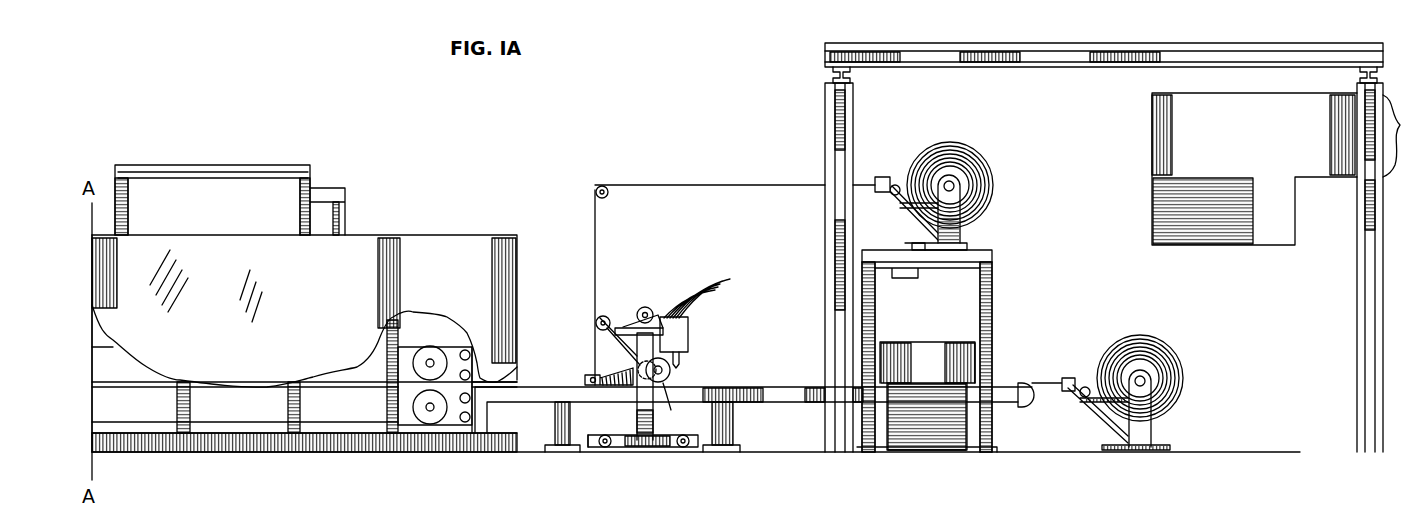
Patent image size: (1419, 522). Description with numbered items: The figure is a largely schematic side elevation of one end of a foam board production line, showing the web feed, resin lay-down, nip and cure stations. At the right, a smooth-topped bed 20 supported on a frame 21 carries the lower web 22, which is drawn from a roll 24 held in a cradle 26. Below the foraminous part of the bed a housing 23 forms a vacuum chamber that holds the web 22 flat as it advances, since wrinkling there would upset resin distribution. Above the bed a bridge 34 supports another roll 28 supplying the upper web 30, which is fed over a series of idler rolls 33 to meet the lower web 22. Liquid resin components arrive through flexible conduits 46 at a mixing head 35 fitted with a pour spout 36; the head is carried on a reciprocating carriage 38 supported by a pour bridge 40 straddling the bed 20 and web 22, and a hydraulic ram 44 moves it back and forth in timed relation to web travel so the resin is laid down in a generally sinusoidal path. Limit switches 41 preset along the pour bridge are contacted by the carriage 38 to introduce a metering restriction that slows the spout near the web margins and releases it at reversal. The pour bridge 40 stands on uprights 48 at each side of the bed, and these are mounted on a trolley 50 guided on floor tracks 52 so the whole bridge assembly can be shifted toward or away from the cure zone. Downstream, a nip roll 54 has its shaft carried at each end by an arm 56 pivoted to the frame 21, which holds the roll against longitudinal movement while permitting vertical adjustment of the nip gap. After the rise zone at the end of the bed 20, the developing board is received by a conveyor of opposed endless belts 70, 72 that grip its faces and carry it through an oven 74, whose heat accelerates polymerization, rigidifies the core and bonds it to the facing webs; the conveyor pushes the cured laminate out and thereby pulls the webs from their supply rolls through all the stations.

The bed 20 is at (771, 392).
The frame 21 is at (798, 398).
The lower web 22 is at (1043, 383).
The housing 23 is at (620, 447).
The roll 24 is at (1165, 370).
The cradle 26 is at (1145, 436).
The roll 28 is at (975, 160).
The upper web 30 is at (737, 184).
The idler rolls 33 is at (606, 196).
The bridge 34 is at (993, 297).
The mixing head 35 is at (688, 342).
The pour spout 36 is at (681, 364).
The reciprocating carriage 38 is at (657, 307).
The pour bridge 40 is at (622, 356).
The limit switches 41 is at (612, 326).
The hydraulic ram 44 is at (627, 320).
The flexible conduits 46 is at (722, 275).
The uprights 48 is at (643, 404).
The trolley 50 is at (666, 450).
The floor tracks 52 is at (742, 440).
The nip roll 54 is at (676, 398).
The arm 56 is at (603, 370).
The endless belt 70 is at (364, 380).
The endless belt 72 is at (358, 390).
The oven 74 is at (428, 246).